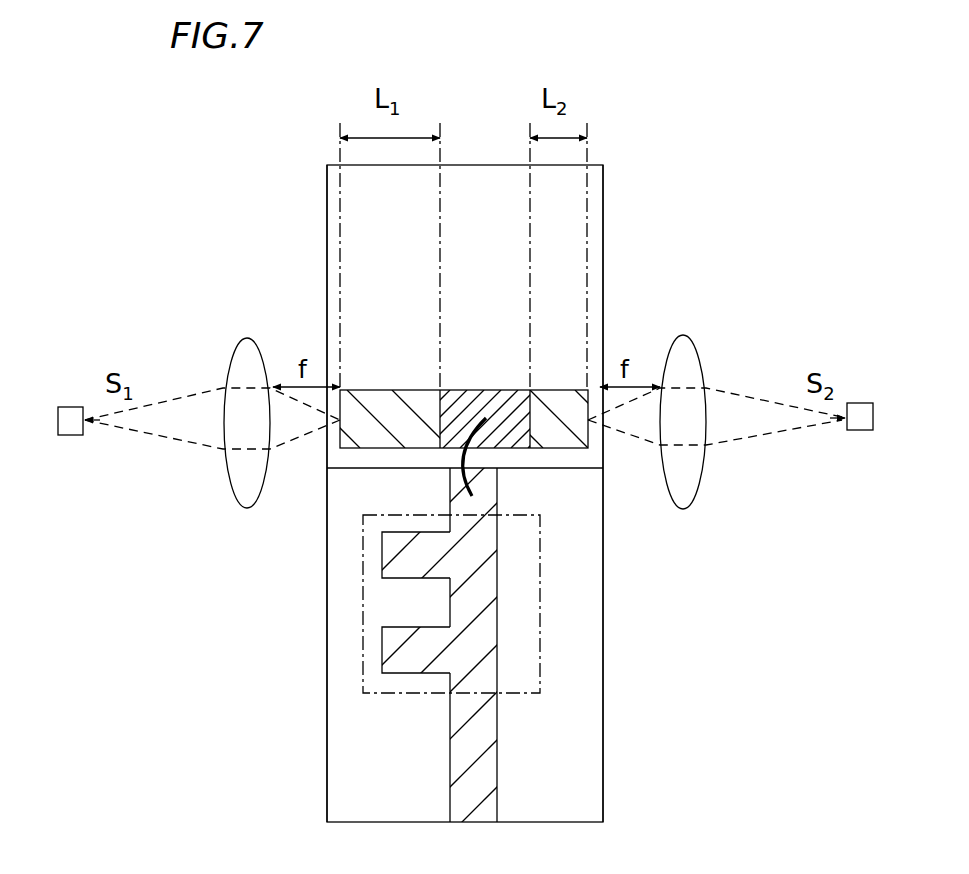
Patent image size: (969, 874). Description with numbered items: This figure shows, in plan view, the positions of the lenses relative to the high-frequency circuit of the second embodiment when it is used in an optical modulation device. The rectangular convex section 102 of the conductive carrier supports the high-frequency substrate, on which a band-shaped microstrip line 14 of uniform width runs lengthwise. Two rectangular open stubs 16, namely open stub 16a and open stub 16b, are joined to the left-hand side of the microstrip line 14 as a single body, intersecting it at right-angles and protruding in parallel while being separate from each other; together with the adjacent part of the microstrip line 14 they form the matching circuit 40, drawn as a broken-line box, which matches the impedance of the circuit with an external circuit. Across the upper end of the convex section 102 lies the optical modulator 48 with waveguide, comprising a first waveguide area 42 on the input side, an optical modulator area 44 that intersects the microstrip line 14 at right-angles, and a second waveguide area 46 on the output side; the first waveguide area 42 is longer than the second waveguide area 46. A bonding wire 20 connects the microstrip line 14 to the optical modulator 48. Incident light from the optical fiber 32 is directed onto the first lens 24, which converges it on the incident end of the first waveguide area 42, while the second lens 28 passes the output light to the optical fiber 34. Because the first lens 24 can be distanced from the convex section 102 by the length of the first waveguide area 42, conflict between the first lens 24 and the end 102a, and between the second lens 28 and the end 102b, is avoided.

The convex section 102 is at (592, 182).
The end of the convex section 102a is at (322, 180).
The end of the convex section 102b is at (608, 229).
The optical modulator with waveguide 48 is at (389, 329).
The second waveguide area 46 is at (560, 388).
The optical modulator area 44 is at (477, 392).
The first waveguide area 42 is at (400, 398).
The bonding wire 20 is at (463, 458).
The microstrip line 14 is at (473, 737).
The open stubs 16 is at (314, 599).
The open stub 16a is at (392, 553).
The open stub 16b is at (392, 653).
The matching circuit 40 is at (540, 662).
The first lens 24 is at (232, 372).
The second lens 28 is at (690, 362).
The optical fiber 32 is at (75, 407).
The optical fiber 34 is at (855, 403).